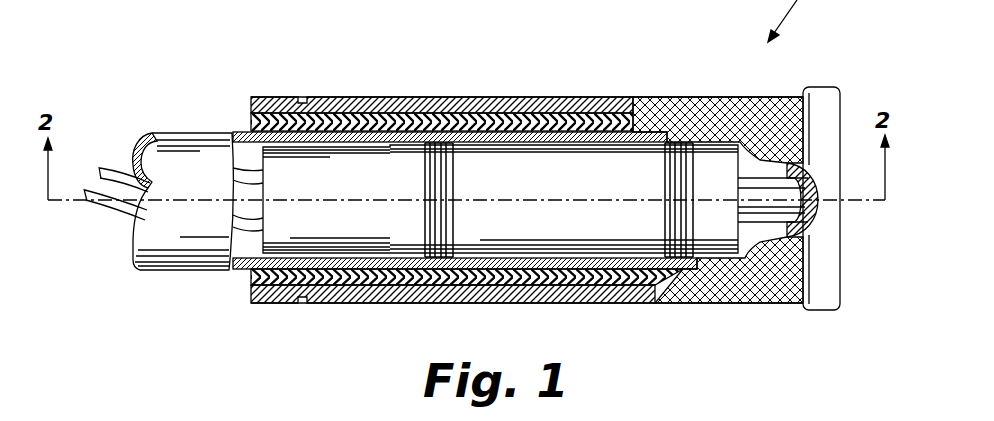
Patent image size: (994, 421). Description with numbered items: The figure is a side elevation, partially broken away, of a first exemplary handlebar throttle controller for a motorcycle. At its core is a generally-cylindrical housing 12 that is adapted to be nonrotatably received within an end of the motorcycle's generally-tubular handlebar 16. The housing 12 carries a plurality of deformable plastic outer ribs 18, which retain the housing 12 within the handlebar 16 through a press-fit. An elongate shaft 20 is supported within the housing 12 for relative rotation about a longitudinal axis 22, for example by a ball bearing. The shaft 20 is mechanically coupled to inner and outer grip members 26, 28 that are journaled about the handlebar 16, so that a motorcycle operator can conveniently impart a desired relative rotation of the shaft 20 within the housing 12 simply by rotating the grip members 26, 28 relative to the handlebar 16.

The housing 12 is at (363, 147).
The handlebar 16 is at (185, 270).
The deformable plastic outer ribs 18 is at (453, 177).
The elongate shaft 20 is at (772, 222).
The longitudinal axis 22 is at (850, 200).
The inner grip member 26 is at (612, 302).
The outer grip member 28 is at (683, 302).